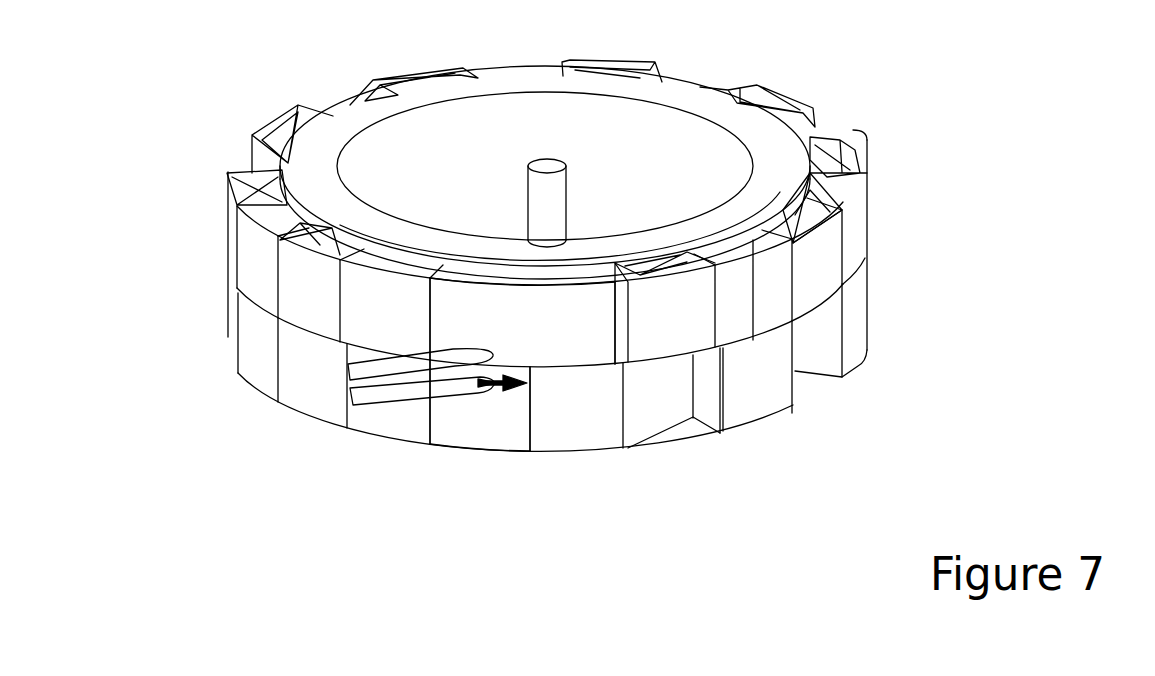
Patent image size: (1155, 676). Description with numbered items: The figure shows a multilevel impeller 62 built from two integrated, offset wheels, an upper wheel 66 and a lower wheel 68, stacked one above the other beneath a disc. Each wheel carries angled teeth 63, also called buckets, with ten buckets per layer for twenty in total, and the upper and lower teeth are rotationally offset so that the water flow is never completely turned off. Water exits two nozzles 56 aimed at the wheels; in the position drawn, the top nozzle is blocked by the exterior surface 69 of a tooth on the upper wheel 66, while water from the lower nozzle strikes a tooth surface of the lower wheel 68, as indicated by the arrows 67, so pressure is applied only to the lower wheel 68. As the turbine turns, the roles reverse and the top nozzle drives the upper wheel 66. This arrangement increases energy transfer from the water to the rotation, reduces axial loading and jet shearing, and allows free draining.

The multilevel impeller 62 is at (914, 104).
The angled teeth 63 is at (252, 137).
The upper wheel 66 is at (216, 265).
The arrows 67 is at (511, 414).
The lower wheel 68 is at (236, 397).
The exterior surface 69 is at (487, 328).
The nozzles 56 is at (397, 424).